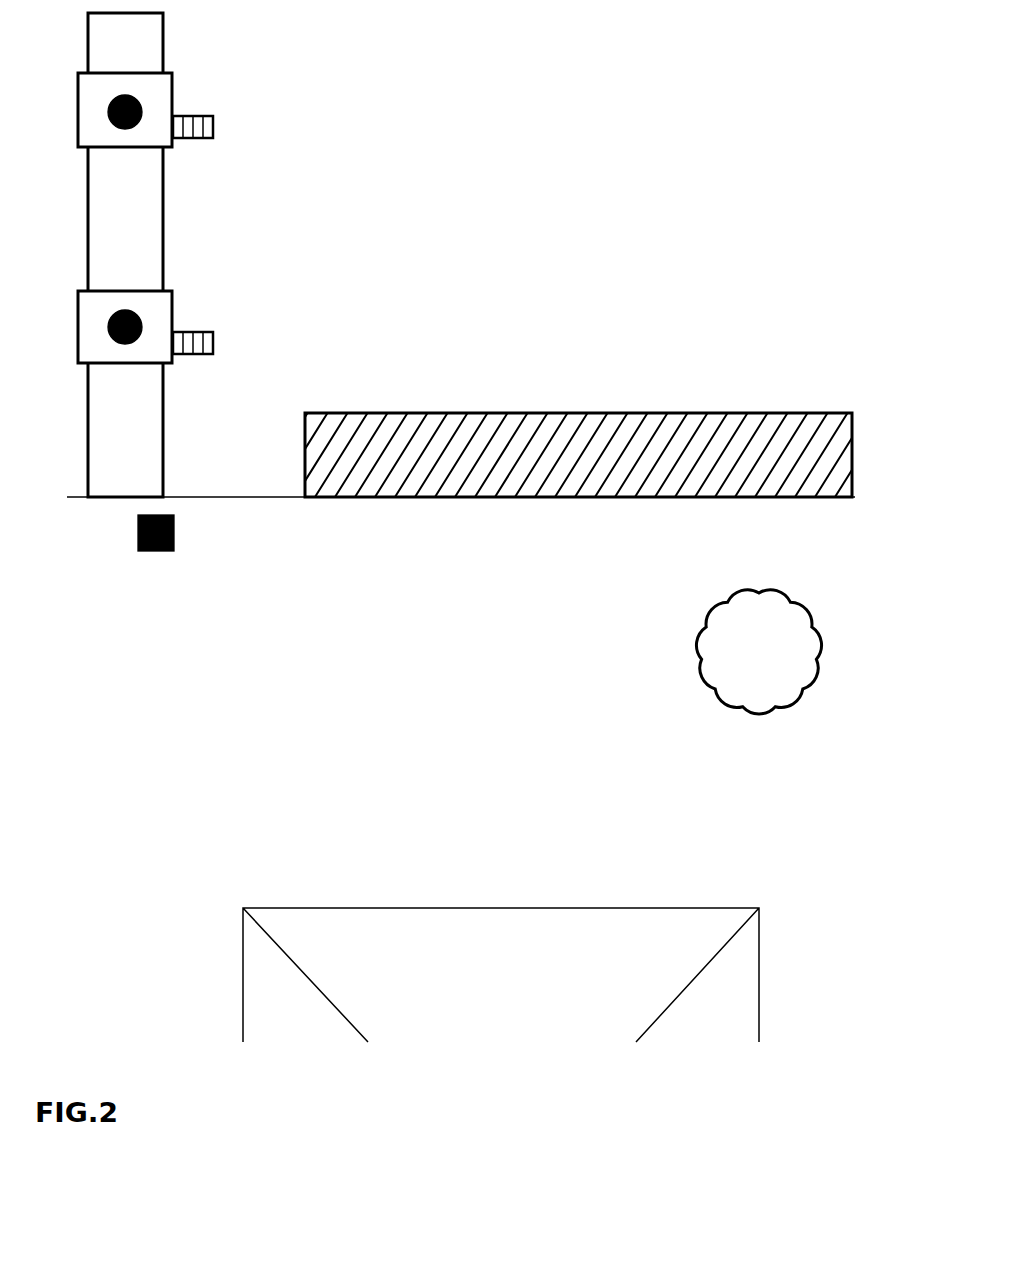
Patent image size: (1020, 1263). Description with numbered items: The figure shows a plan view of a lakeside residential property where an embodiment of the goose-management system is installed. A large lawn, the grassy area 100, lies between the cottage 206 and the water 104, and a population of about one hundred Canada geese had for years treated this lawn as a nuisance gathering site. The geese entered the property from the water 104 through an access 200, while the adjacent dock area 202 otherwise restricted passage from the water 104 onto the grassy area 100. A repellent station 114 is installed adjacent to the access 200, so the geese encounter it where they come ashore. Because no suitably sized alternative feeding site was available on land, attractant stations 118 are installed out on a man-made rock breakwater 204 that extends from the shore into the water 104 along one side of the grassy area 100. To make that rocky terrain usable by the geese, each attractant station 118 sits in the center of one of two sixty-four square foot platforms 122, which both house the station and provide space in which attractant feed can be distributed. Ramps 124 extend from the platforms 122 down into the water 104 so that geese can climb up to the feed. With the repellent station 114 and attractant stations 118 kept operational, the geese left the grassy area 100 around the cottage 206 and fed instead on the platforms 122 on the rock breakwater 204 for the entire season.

The grassy area 100 is at (638, 652).
The water 104 is at (577, 124).
The repellent station 114 is at (156, 551).
The attractant stations 118 is at (138, 98).
The platforms 122 is at (160, 301).
The ramps 124 is at (215, 126).
The access 200 is at (243, 497).
The dock area 202 is at (625, 413).
The rock breakwater 204 is at (140, 207).
The cottage 206 is at (491, 960).